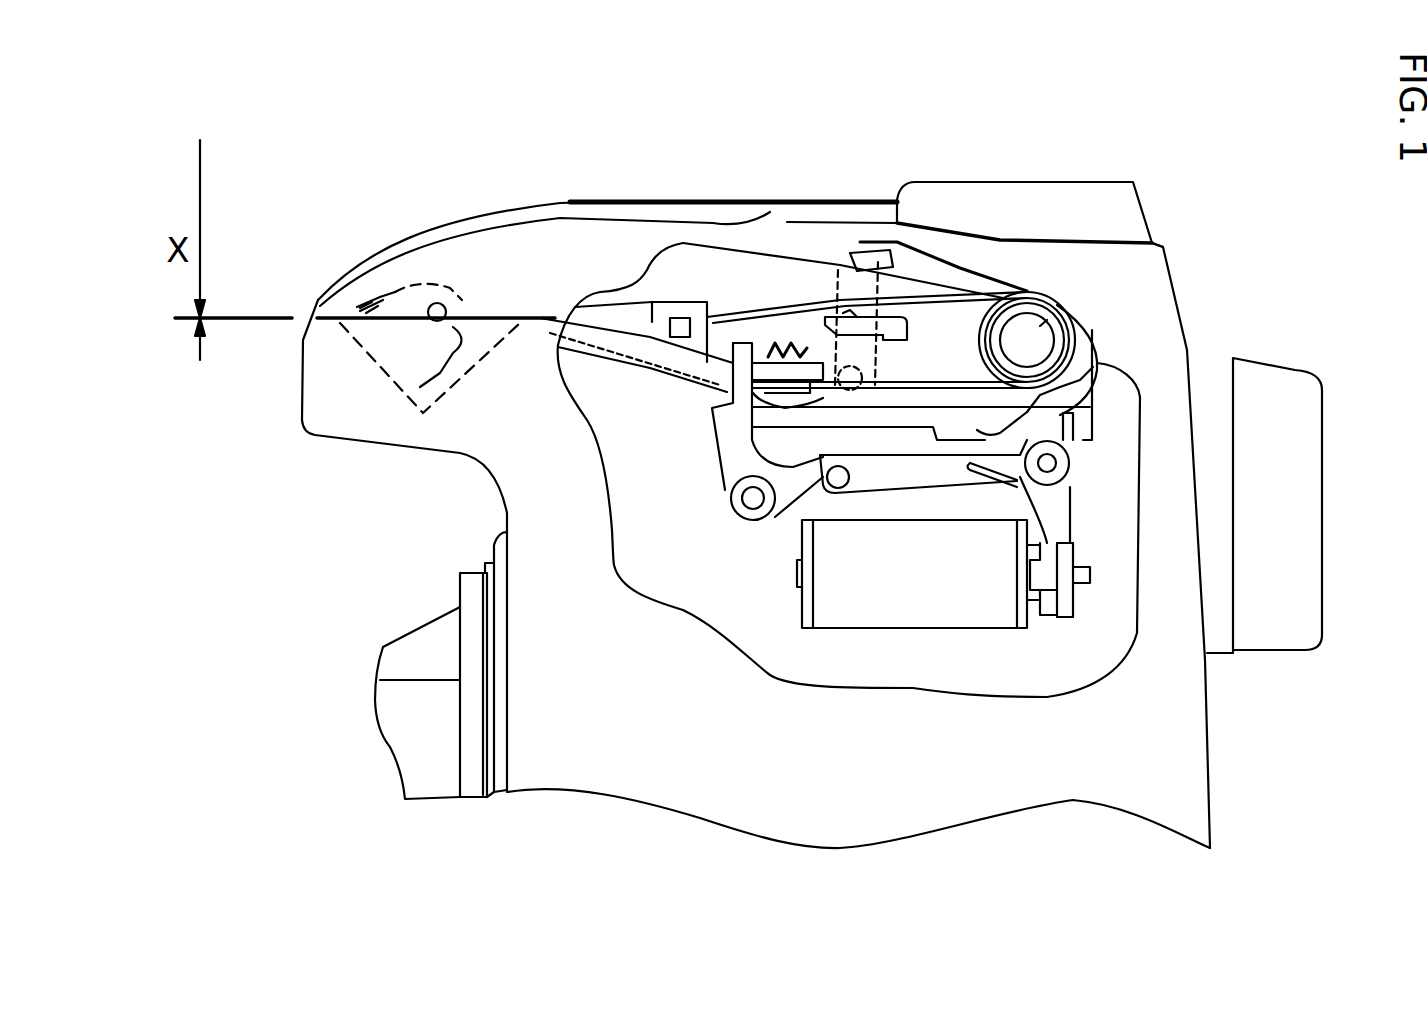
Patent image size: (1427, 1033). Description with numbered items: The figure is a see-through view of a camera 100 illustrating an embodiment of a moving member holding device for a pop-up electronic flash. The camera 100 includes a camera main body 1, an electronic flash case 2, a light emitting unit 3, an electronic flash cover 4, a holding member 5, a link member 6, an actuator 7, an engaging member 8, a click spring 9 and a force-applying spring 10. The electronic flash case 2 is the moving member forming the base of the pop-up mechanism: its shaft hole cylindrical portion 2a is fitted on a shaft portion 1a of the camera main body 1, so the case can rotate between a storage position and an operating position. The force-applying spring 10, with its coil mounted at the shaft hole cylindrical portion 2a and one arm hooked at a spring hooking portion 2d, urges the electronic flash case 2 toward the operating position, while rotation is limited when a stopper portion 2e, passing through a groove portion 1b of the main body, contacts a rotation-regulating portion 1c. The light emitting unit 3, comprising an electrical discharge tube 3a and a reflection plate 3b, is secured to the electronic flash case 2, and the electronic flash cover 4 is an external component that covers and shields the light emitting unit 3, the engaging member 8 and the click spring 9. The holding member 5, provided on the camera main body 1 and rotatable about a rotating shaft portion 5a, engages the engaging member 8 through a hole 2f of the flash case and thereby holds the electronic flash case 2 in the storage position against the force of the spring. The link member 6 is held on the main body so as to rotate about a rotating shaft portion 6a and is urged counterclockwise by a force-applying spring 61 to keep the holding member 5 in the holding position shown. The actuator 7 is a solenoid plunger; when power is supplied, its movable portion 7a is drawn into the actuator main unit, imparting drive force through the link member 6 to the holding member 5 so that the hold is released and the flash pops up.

The camera 100 is at (1097, 154).
The camera main body 1 is at (1108, 263).
The shaft portion 1a is at (1027, 340).
The groove portion 1b is at (898, 223).
The rotation-regulating portion 1c is at (867, 250).
The electronic flash case 2 is at (775, 283).
The shaft hole cylindrical portion 2a is at (1077, 337).
The spring hooking portion 2d is at (683, 300).
The stopper portion 2e is at (840, 392).
The hole 2f is at (717, 363).
The light emitting unit 3 is at (367, 307).
The electrical discharge tube 3a is at (437, 303).
The reflection plate 3b is at (362, 307).
The electronic flash cover 4 is at (523, 247).
The holding member 5 is at (727, 437).
The rotating shaft portion 5a is at (752, 500).
The link member 6 is at (1058, 517).
The rotating shaft portion 6a is at (1057, 525).
The force-applying spring 61 is at (1050, 463).
The actuator 7 is at (953, 600).
The movable portion 7a is at (1073, 600).
The engaging member 8 is at (770, 353).
The click spring 9 is at (803, 333).
The force-applying spring 10 is at (967, 282).